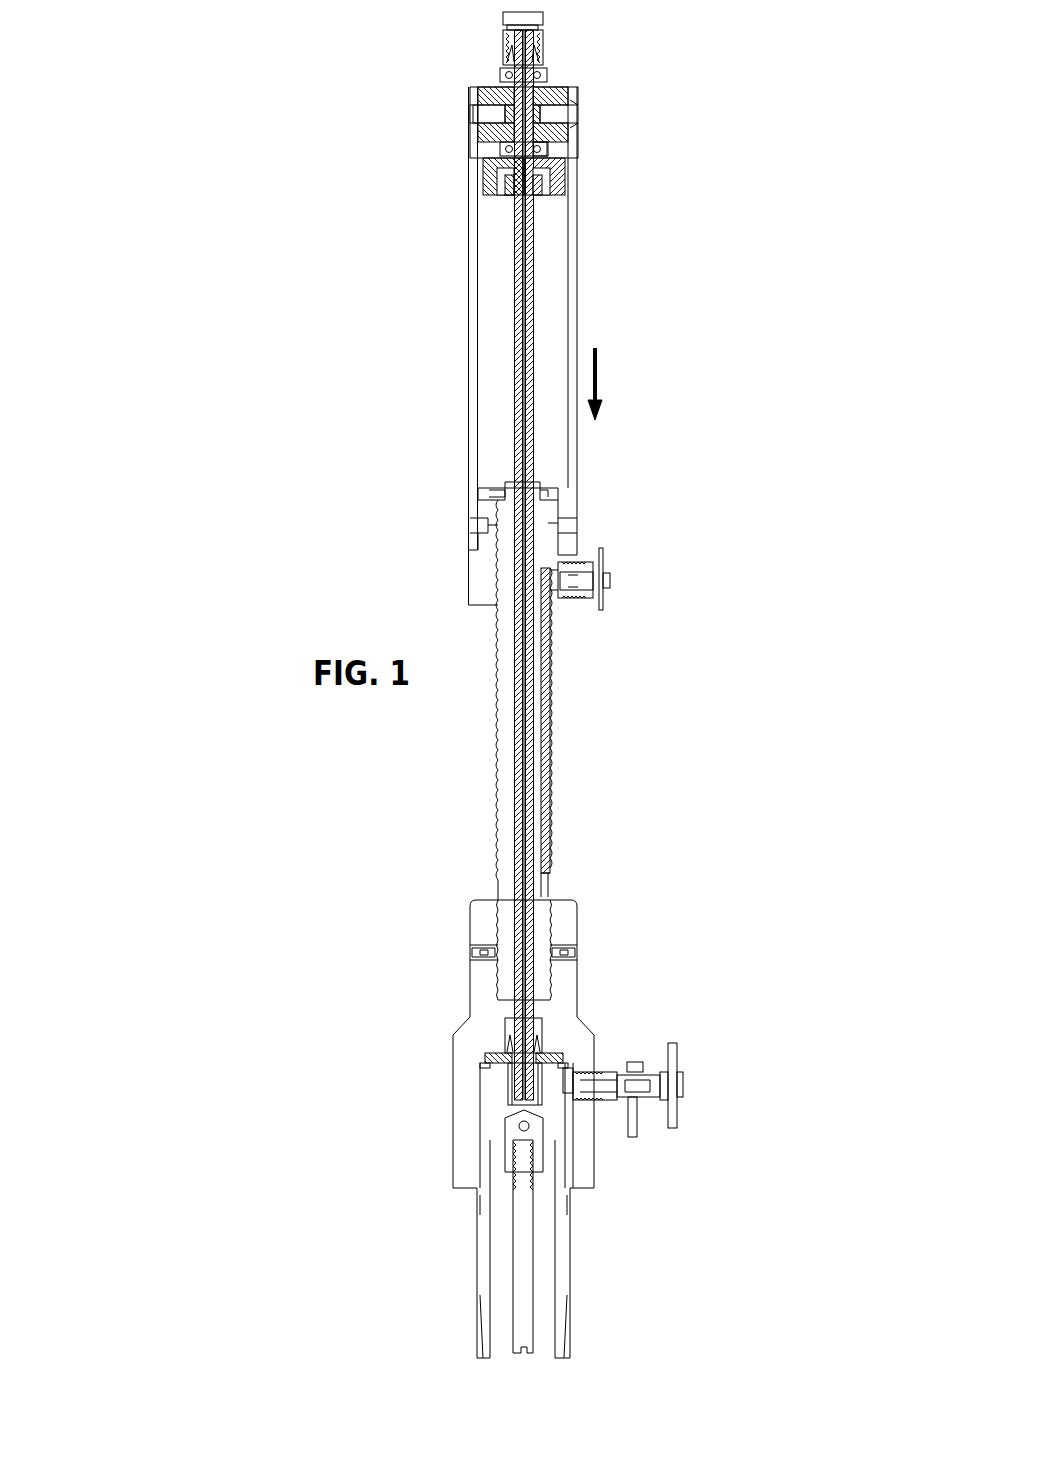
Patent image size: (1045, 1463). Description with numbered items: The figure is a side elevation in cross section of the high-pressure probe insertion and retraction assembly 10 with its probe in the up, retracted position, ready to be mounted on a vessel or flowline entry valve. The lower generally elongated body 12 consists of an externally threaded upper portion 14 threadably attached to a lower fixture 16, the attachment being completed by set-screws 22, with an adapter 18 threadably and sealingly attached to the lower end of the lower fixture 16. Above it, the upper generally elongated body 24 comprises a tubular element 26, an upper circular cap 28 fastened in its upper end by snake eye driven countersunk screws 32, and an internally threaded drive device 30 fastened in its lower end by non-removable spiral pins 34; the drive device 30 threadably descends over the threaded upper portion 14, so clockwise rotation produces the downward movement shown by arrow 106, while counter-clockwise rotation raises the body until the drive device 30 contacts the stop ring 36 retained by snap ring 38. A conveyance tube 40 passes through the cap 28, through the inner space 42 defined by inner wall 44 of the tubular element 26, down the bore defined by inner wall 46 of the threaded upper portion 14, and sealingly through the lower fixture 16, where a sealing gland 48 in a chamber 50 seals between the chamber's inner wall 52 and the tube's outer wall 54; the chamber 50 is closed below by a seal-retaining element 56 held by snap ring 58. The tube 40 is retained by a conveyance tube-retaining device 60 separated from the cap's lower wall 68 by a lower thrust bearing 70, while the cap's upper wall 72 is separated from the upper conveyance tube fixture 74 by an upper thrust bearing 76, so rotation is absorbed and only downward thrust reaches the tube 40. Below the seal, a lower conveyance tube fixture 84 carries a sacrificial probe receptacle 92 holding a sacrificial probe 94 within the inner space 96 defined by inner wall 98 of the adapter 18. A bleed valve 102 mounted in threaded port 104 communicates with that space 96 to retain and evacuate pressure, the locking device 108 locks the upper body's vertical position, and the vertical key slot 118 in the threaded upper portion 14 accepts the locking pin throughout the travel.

The high-pressure probe insertion and retraction assembly 10 is at (255, 82).
The lower generally elongated body 12 is at (613, 925).
The externally threaded upper portion 14 is at (470, 745).
The lower fixture 16 is at (415, 1083).
The adapter 18 is at (578, 1255).
The set-screws 22 is at (465, 950).
The upper generally elongated body 24 is at (445, 262).
The tubular element 26 is at (575, 262).
The upper circular cap 28 is at (490, 127).
The internally threaded drive device 30 is at (465, 575).
The snake eye driven countersunk screws 32 is at (585, 112).
The non-removable spiral pins 34 is at (555, 522).
The stop ring 36 is at (555, 492).
The snap ring 38 is at (490, 483).
The conveyance tube 40 is at (513, 368).
The inner space 42 is at (553, 440).
The inner wall 44 is at (552, 366).
The inner wall 46 is at (524, 780).
The sealing gland 48 is at (505, 1030).
The chamber 50 is at (545, 1037).
The inner wall 52 is at (523, 1025).
The outer wall 54 is at (495, 240).
The seal-retaining element 56 is at (487, 1057).
The snap ring 58 is at (483, 1067).
The conveyance tube-retaining device 60 is at (487, 181).
The lower wall 68 is at (560, 143).
The lower thrust bearing 70 is at (500, 150).
The upper wall 72 is at (560, 80).
The upper conveyance tube fixture 74 is at (500, 45).
The upper thrust bearing 76 is at (500, 77).
The lower conveyance tube fixture 84 is at (505, 1095).
The sacrificial probe receptacle 92 is at (507, 1147).
The sacrificial probe 94 is at (515, 1247).
The inner space 96 is at (545, 1220).
The inner wall 98 is at (555, 1325).
The bleed valve 102 is at (690, 1083).
The threaded port 104 is at (600, 1100).
The arrow 106 is at (614, 387).
The locking device 108 is at (618, 578).
The vertical key slot 118 is at (550, 632).